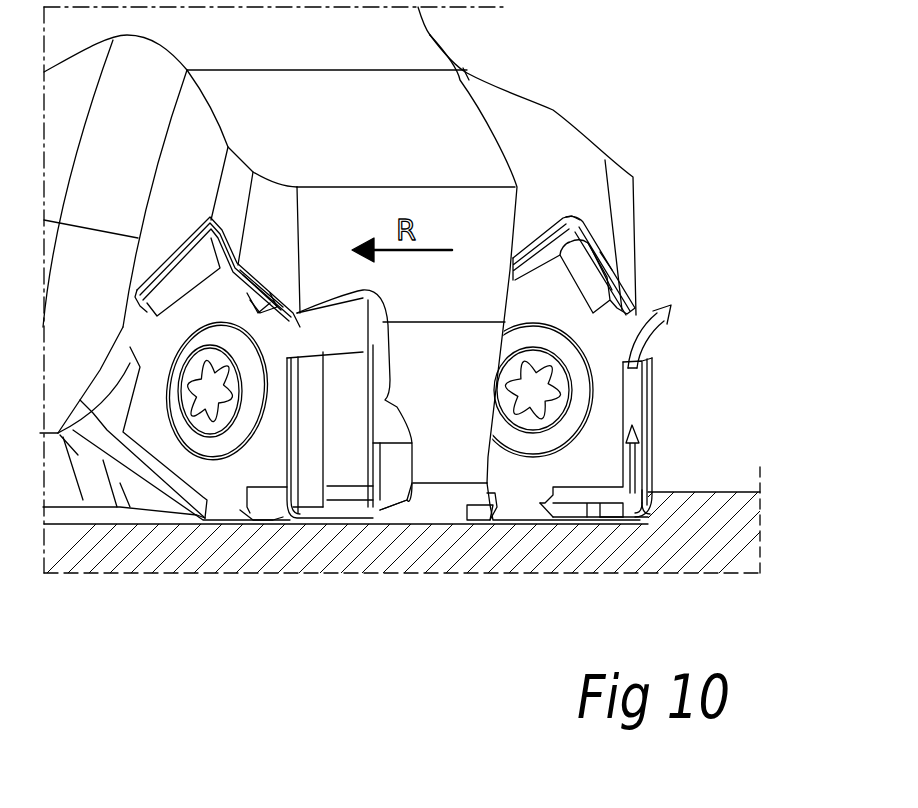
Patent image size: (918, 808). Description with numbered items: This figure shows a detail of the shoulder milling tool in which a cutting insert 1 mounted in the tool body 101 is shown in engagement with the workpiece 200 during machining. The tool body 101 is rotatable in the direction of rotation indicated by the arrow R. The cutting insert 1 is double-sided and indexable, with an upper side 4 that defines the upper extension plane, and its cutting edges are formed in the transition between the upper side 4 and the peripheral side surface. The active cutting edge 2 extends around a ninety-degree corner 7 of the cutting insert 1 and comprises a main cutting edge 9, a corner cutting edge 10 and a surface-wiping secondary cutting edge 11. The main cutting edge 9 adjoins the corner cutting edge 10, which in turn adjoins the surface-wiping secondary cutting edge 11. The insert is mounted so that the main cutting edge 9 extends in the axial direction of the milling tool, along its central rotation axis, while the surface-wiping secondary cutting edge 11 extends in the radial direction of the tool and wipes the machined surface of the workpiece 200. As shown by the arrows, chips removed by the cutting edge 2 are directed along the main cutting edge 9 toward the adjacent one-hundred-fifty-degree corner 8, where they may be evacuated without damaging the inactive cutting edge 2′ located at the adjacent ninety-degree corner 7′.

The tool body 101 is at (528, 113).
The cutting insert 1 is at (548, 275).
The adjacent 90° corner 7′ is at (580, 223).
The inactive cutting edge 2′ is at (603, 256).
The 150° corner 8 is at (643, 355).
The cutting edge 2 is at (653, 395).
The main cutting edge 9 is at (650, 497).
The corner cutting edge 10 is at (650, 513).
The workpiece 200 is at (740, 527).
The 90° corner 7 is at (650, 518).
The surface-wiping secondary cutting edge 11 is at (615, 525).
The upper side 4 is at (528, 493).